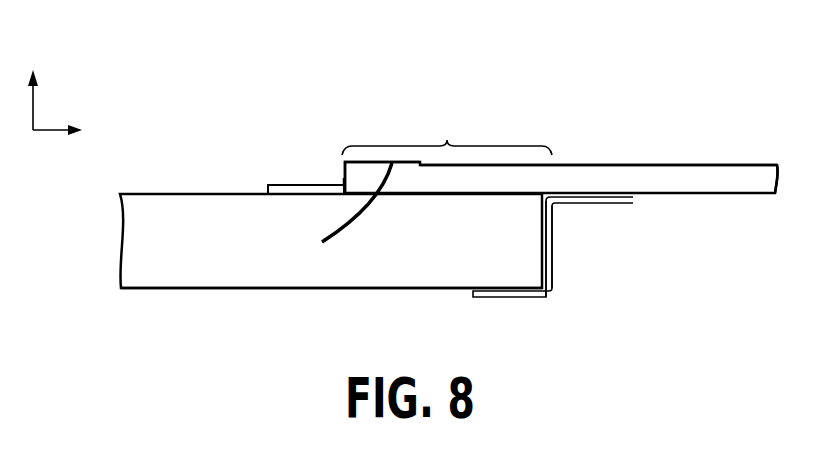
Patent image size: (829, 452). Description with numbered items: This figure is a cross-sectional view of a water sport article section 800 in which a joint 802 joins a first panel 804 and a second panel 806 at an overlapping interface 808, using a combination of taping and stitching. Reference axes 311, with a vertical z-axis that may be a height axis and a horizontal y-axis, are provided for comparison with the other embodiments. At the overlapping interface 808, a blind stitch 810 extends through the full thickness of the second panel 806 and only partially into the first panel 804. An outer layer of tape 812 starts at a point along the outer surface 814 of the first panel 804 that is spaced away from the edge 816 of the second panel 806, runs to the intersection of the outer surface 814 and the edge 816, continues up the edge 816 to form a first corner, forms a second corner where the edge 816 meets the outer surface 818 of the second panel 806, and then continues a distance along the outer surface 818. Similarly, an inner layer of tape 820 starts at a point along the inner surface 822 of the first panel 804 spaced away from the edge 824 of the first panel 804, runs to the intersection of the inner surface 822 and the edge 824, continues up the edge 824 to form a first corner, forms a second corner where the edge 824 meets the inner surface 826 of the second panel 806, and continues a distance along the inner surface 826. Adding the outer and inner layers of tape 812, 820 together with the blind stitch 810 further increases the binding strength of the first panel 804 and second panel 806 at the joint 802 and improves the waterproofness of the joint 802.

The water sport article section 800 is at (722, 56).
The joint 802 is at (452, 94).
The first panel 804 is at (331, 241).
The second panel 806 is at (561, 178).
The overlapping interface 808 is at (447, 137).
The blind stitch 810 is at (370, 215).
The outer layer of tape 812 is at (344, 170).
The outer surface of the first panel 814 is at (304, 197).
The edge of the second panel 816 is at (343, 180).
The outer surface of the second panel 818 is at (593, 165).
The inner layer of tape 820 is at (553, 263).
The inner surface of the first panel 822 is at (363, 292).
The edge of the first panel 824 is at (552, 227).
The inner surface of the second panel 826 is at (692, 193).
The reference axes 311 is at (62, 82).